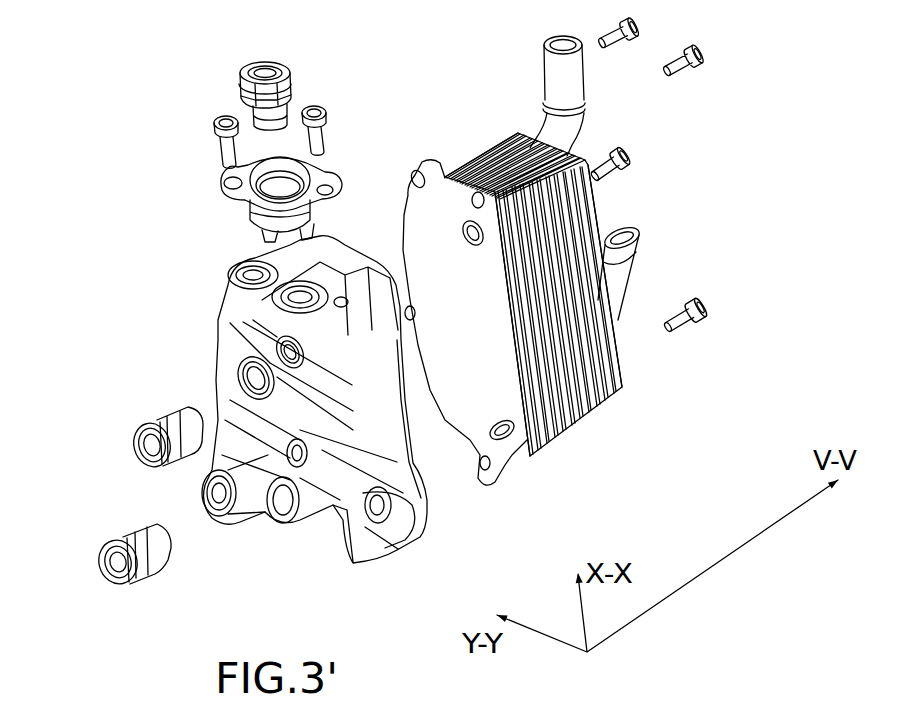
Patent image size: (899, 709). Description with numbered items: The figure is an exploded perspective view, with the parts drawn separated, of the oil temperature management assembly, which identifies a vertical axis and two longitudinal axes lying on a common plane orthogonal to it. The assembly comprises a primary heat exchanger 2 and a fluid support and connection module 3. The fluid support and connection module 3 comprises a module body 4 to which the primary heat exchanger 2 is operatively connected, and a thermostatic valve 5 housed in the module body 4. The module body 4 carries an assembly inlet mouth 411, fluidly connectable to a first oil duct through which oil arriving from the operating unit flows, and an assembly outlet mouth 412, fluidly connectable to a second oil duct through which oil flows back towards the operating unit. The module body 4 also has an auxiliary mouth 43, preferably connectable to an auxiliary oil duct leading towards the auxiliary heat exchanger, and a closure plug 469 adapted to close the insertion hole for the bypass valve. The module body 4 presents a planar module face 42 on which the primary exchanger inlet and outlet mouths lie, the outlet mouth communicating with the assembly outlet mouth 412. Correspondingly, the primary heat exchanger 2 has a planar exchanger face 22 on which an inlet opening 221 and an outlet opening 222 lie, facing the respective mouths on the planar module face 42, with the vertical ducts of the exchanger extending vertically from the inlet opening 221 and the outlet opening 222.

The primary heat exchanger 2 is at (593, 252).
The planar exchanger face 22 is at (420, 212).
The inlet opening 221 is at (478, 207).
The outlet opening 222 is at (527, 435).
The fluid support and connection module 3 is at (413, 552).
The module body 4 is at (283, 398).
The assembly inlet mouth 411 is at (237, 280).
The assembly outlet mouth 412 is at (198, 511).
The planar module face 42 is at (422, 468).
The auxiliary mouth 43 is at (229, 379).
The closure plug 469 is at (245, 262).
The thermostatic valve 5 is at (214, 175).